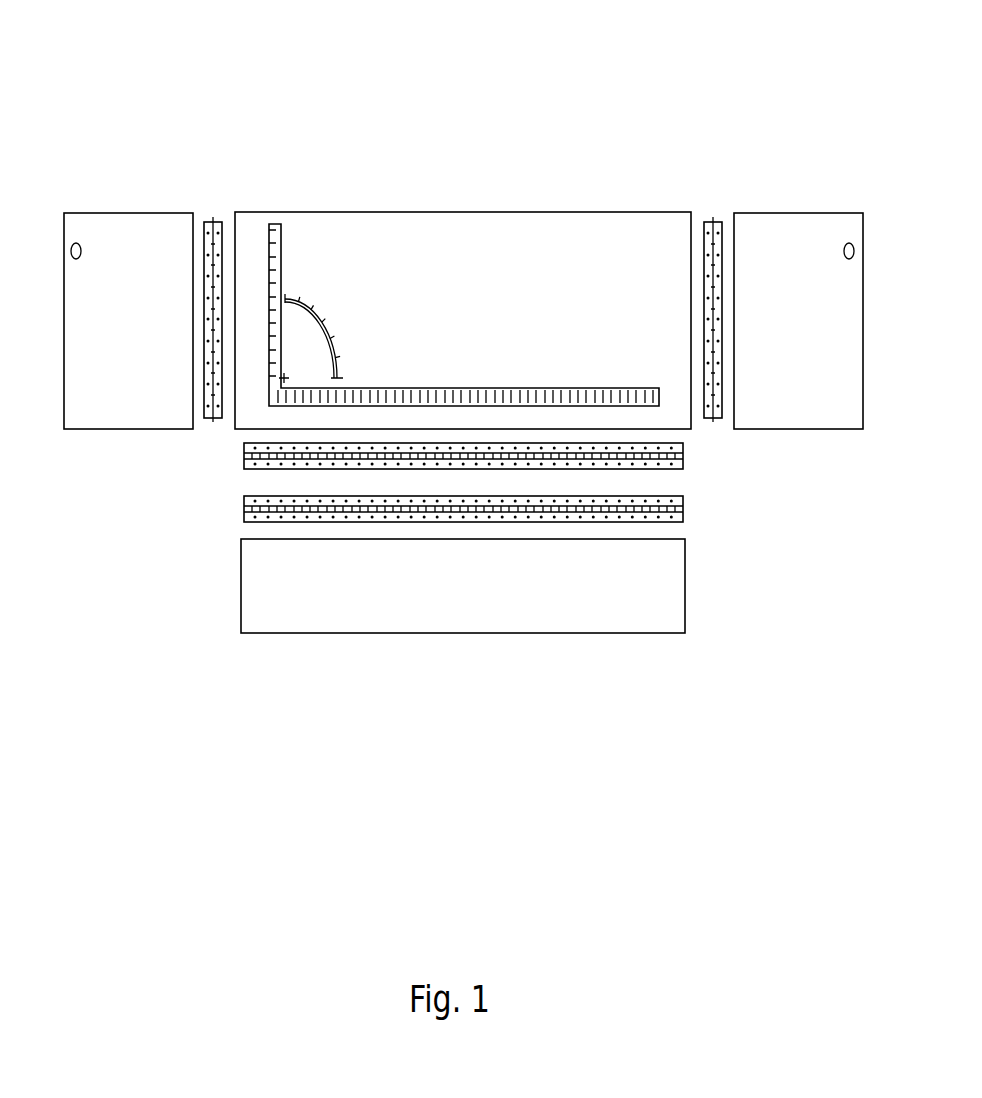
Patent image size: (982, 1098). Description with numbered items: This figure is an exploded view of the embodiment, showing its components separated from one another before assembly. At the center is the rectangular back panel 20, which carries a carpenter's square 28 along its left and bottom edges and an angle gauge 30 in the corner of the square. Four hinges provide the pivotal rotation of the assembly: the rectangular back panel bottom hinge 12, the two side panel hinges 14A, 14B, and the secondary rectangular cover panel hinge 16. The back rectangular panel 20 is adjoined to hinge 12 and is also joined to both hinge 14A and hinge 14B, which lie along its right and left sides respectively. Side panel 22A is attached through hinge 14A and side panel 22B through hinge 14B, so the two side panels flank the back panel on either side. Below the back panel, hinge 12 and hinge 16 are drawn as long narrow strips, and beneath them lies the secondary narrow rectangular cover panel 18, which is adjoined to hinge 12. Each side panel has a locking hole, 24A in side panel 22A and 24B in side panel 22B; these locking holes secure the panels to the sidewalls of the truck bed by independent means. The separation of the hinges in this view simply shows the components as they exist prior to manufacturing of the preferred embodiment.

The rectangular back panel bottom hinge 12 is at (243, 451).
The side panel hinge 14A is at (714, 220).
The side panel hinge 14B is at (213, 219).
The secondary rectangular cover panel hinge 16 is at (243, 503).
The secondary narrow rectangular cover panel 18 is at (285, 598).
The rectangular back panel 20 is at (627, 262).
The side panel 22A is at (811, 381).
The side panel 22B is at (103, 379).
The locking hole 24A is at (851, 243).
The locking hole 24B is at (74, 243).
The carpenter's square 28 is at (275, 245).
The angle gauge 30 is at (308, 302).